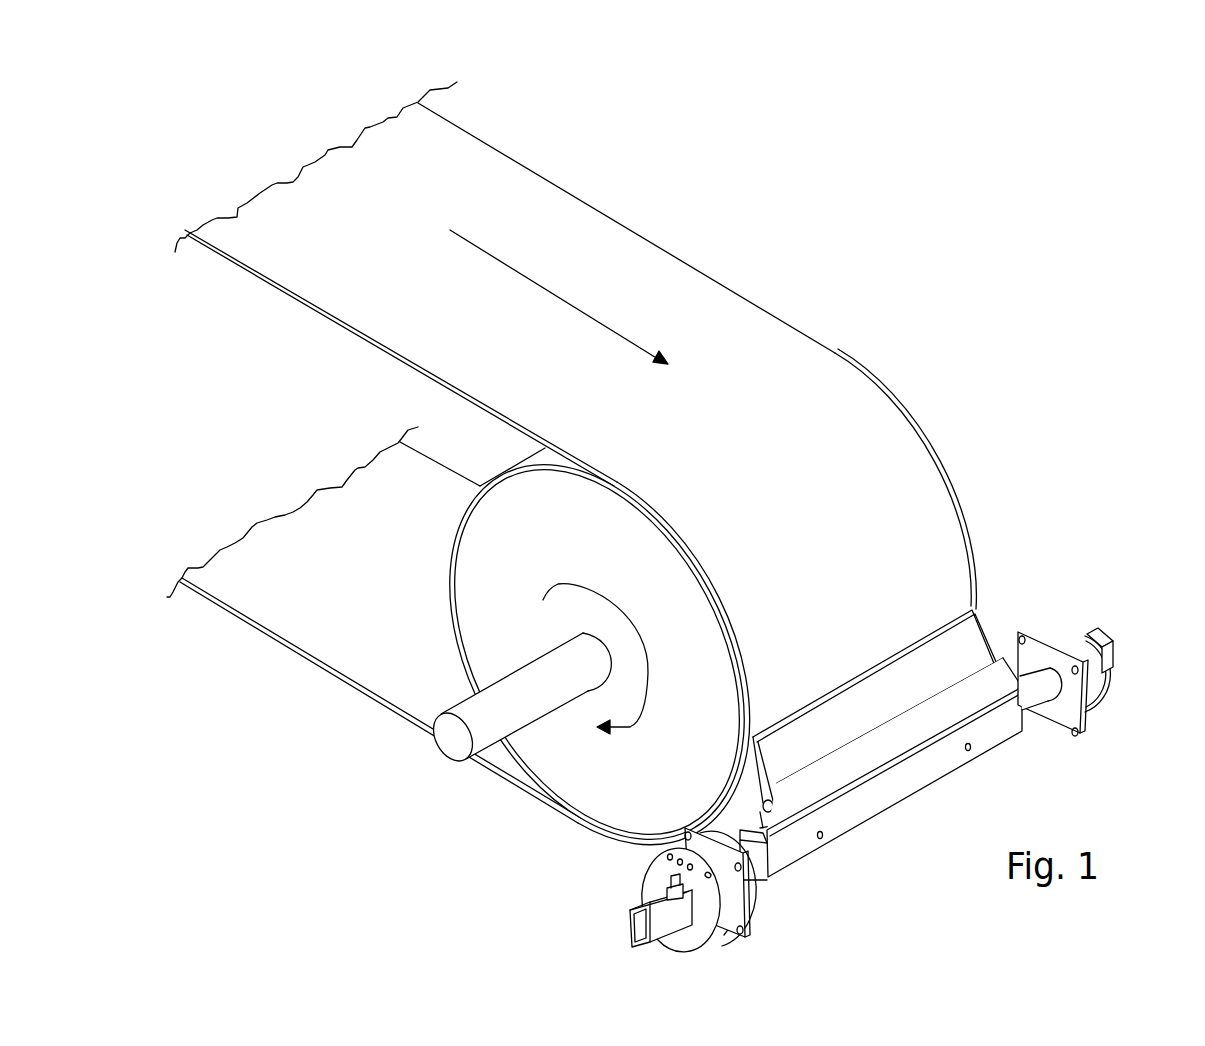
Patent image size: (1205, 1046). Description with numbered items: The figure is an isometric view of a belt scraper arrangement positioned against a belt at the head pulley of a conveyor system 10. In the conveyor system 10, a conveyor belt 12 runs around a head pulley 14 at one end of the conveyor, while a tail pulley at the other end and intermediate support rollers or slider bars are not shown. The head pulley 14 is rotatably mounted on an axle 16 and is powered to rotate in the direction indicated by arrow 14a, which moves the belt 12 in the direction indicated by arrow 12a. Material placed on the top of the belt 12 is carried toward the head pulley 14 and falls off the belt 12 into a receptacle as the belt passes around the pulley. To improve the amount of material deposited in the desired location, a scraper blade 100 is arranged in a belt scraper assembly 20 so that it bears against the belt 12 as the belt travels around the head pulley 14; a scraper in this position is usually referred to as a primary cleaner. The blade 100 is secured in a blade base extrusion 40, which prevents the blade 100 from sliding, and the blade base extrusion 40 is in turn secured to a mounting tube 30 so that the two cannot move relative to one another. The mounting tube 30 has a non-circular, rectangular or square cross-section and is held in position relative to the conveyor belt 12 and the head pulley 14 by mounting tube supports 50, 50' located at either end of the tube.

The conveyor system 10 is at (938, 364).
The conveyor belt 12 is at (740, 296).
The arrow (belt direction) 12a is at (598, 323).
The head pulley 14 is at (604, 826).
The arrow (pulley rotation direction) 14a is at (632, 727).
The axle 16 is at (438, 742).
The scraper blade 100 is at (985, 625).
The blade base extrusion 40 is at (875, 810).
The mounting tube 30 is at (1033, 715).
The belt scraper assembly 20 is at (1046, 615).
The mounting tube support 50' is at (1128, 680).
The mounting tube support 50 is at (660, 892).